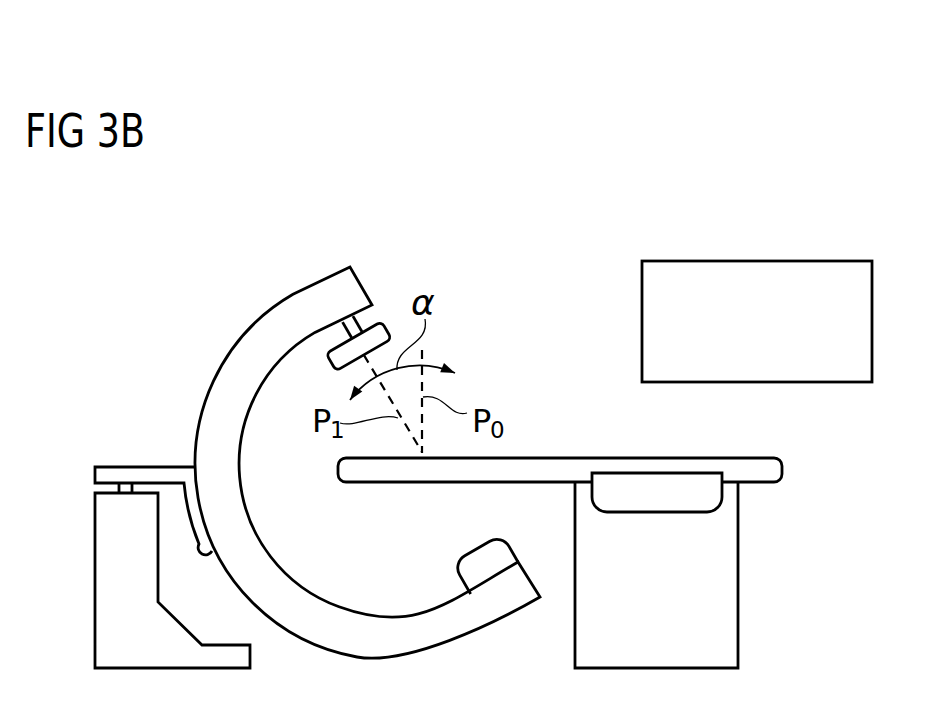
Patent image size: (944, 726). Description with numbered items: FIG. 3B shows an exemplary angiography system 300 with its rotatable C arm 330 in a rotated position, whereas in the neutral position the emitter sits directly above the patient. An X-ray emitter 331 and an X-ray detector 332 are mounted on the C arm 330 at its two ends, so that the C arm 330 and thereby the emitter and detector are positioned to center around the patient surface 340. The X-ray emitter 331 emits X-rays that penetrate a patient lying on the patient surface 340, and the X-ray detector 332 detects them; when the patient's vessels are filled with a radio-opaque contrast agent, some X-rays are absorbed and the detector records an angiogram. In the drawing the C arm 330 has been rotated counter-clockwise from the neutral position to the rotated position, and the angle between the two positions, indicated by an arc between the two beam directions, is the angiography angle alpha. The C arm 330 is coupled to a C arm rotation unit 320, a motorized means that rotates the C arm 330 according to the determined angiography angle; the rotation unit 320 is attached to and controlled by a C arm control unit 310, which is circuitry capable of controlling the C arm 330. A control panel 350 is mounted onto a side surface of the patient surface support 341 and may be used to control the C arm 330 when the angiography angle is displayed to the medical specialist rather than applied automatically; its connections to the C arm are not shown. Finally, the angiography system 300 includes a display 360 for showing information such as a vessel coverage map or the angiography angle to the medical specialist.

The angiography system 300 is at (180, 272).
The C arm control unit 310 is at (112, 550).
The C arm rotation unit 320 is at (133, 475).
The C arm 330 is at (317, 307).
The X-ray emitter 331 is at (383, 325).
The X-ray detector 332 is at (467, 577).
The patient surface 340 is at (782, 468).
The patient surface support 341 is at (727, 594).
The control panel 350 is at (656, 500).
The display 360 is at (757, 275).